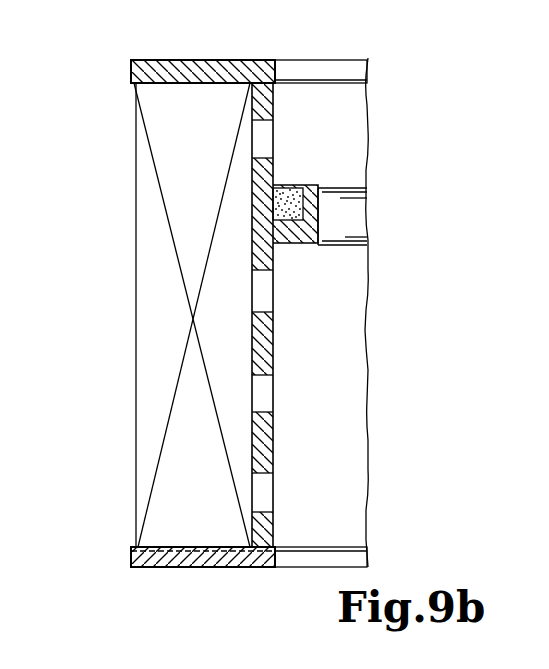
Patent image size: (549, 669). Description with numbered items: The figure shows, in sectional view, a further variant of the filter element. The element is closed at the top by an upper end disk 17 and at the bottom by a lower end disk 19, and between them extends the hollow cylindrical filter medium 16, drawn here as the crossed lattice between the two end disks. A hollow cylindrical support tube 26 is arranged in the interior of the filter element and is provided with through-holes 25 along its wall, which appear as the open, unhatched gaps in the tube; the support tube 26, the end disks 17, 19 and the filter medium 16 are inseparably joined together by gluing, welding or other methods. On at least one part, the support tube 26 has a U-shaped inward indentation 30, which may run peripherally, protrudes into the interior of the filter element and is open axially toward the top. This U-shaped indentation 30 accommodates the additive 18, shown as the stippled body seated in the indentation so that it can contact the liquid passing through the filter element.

The filter medium 16 is at (178, 355).
The upper end disk 17 is at (186, 72).
The additive 18 is at (293, 186).
The lower end disk 19 is at (183, 560).
The through-holes 25 is at (262, 138).
The support tube 26 is at (257, 333).
The U-shaped indentation 30 is at (320, 219).